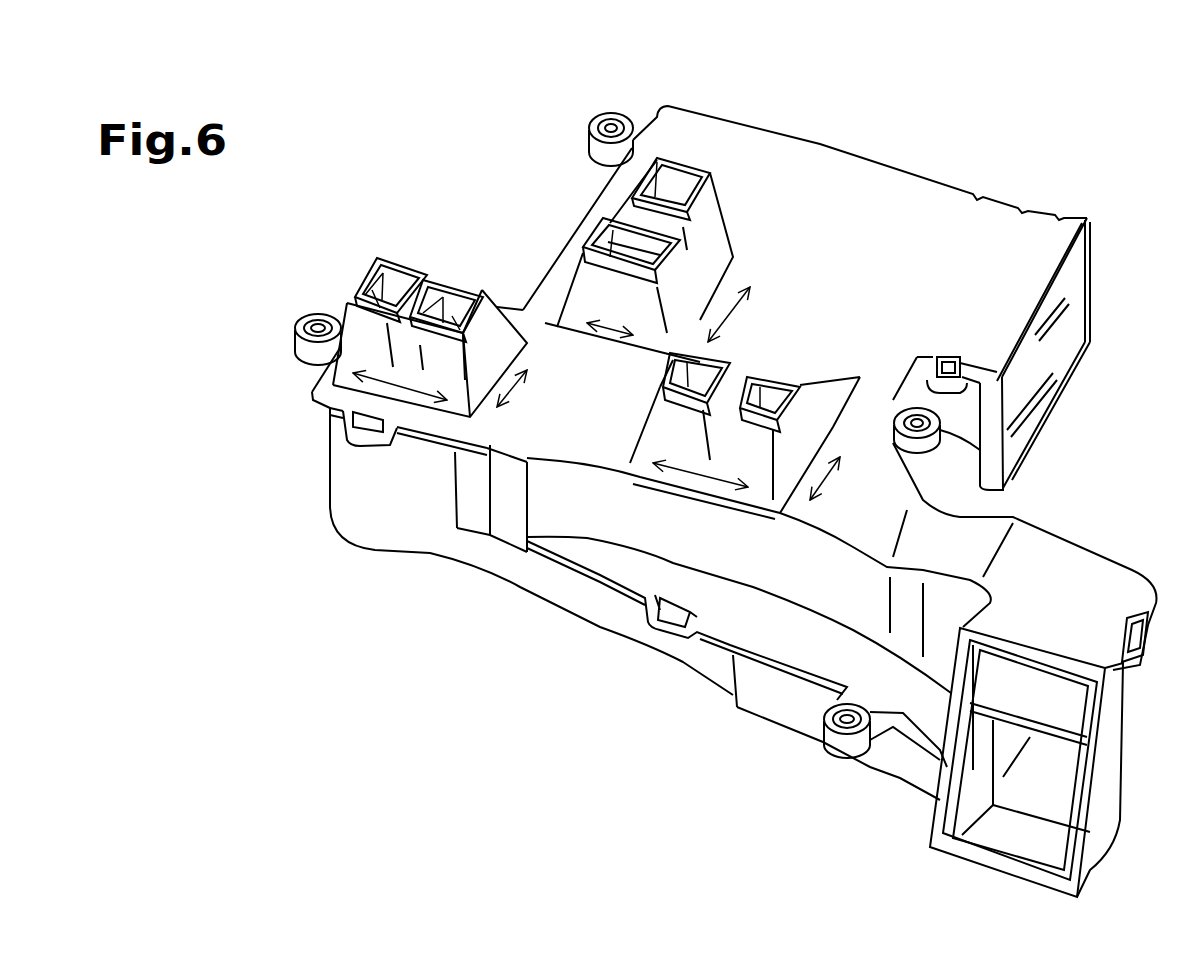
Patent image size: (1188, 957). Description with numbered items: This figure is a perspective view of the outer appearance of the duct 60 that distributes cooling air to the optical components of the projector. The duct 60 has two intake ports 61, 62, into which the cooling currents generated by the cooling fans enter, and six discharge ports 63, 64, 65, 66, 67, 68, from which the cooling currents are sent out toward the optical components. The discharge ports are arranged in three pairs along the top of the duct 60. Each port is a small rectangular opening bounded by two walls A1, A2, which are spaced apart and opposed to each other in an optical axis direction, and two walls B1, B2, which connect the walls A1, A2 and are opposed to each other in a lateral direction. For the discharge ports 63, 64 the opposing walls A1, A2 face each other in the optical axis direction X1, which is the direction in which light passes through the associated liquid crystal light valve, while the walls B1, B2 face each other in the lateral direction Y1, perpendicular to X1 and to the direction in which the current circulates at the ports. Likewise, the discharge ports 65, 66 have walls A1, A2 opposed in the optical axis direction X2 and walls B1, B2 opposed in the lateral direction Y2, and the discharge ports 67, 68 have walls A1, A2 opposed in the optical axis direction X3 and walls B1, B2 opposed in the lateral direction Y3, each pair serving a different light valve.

The duct 60 is at (940, 168).
The intake port 61 is at (1100, 773).
The intake port 62 is at (1076, 278).
The discharge port 63 is at (777, 147).
The discharge port 64 is at (513, 257).
The discharge port 65 is at (872, 413).
The discharge port 66 is at (586, 347).
The discharge port 67 is at (293, 200).
The discharge port 68 is at (403, 153).
The wall A1 is at (785, 420).
The wall A2 is at (790, 378).
The wall B1 is at (775, 385).
The wall B2 is at (790, 400).
The optical axis direction X1 is at (733, 328).
The lateral direction Y1 is at (607, 327).
The optical axis direction X2 is at (675, 462).
The lateral direction Y2 is at (830, 482).
The optical axis direction X3 is at (430, 387).
The lateral direction Y3 is at (517, 413).